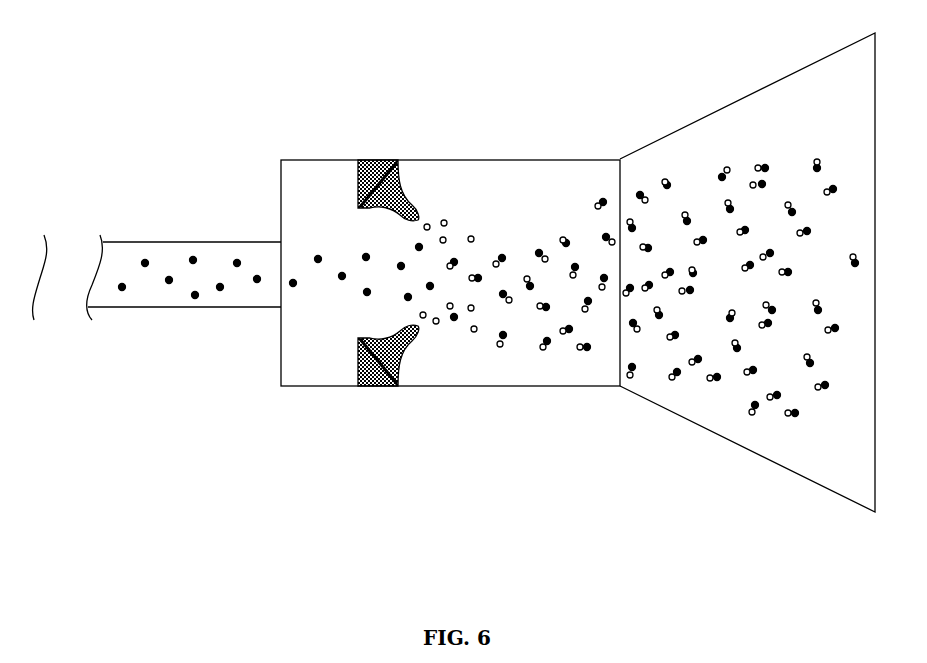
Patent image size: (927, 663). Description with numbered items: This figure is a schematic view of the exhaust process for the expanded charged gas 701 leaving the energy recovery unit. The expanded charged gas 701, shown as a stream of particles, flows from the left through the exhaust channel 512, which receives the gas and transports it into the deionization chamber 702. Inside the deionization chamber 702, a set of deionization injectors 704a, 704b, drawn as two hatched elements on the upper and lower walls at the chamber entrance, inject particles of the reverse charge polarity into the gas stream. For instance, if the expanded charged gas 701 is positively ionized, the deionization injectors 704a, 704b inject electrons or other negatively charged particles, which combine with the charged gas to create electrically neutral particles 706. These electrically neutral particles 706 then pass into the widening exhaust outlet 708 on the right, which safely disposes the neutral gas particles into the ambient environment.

The exhaust channel 512 is at (180, 308).
The expanded charged gas 701 is at (193, 256).
The deionization chamber 702 is at (506, 388).
The deionization injector 704a is at (377, 385).
The deionization injector 704b is at (357, 183).
The electrically neutral particles 706 is at (815, 159).
The exhaust outlet 708 is at (717, 423).